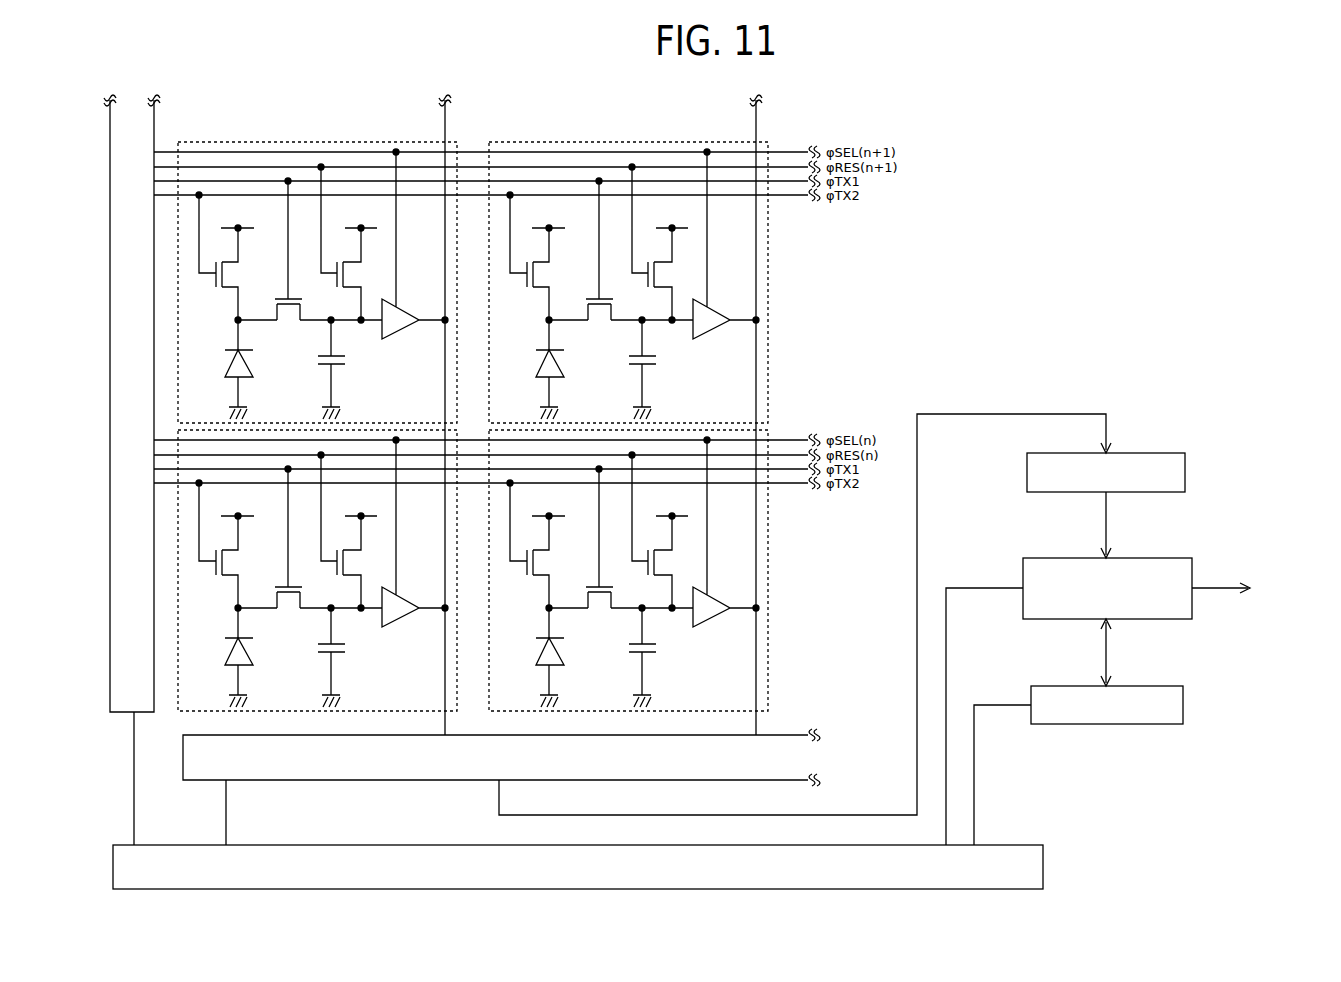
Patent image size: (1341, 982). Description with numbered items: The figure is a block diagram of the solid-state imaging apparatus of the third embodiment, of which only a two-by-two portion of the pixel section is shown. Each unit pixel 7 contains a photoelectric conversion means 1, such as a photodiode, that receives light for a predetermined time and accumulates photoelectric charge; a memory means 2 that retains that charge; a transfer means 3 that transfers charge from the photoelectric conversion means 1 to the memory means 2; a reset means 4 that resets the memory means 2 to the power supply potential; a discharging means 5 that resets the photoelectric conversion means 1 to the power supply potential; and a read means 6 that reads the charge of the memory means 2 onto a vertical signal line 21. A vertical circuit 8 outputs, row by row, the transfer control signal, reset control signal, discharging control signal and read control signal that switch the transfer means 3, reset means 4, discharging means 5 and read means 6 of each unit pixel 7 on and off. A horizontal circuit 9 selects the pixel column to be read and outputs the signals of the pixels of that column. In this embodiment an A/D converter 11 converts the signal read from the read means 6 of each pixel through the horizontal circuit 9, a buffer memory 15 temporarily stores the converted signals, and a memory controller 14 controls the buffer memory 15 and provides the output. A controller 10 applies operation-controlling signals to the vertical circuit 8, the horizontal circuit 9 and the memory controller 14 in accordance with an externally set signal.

The photoelectric conversion means 1 is at (564, 364).
The memory means 2 is at (654, 367).
The transfer means 3 is at (594, 296).
The reset means 4 is at (669, 272).
The discharging means 5 is at (522, 287).
The read means 6 is at (711, 325).
The unit pixel 7 is at (614, 140).
The vertical circuit 8 is at (142, 714).
The horizontal circuit 9 is at (414, 782).
The controller 10 is at (1043, 868).
The A/D converter 11 is at (1150, 452).
The memory controller 14 is at (1160, 558).
The buffer memory 15 is at (1152, 686).
The vertical signal line 21 is at (757, 383).